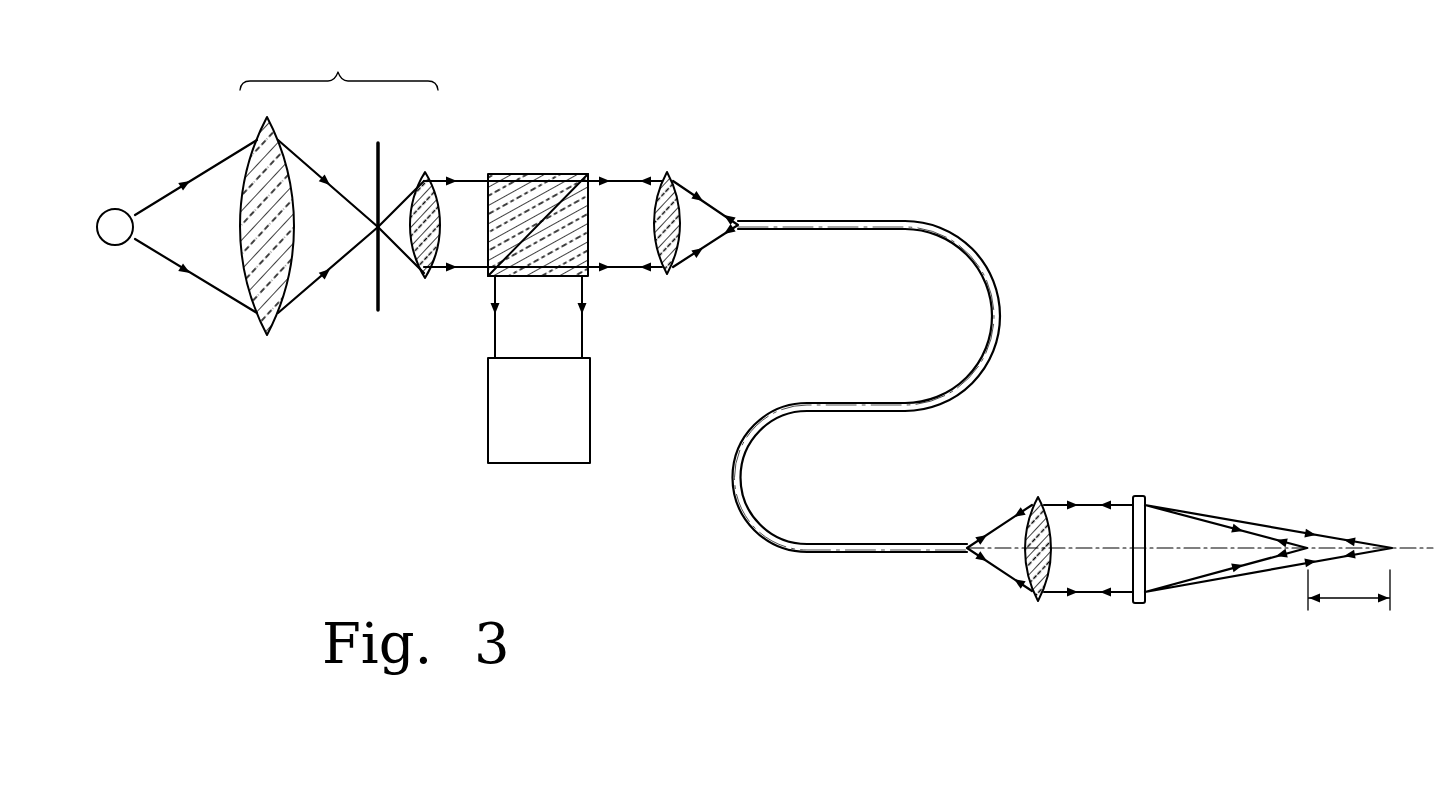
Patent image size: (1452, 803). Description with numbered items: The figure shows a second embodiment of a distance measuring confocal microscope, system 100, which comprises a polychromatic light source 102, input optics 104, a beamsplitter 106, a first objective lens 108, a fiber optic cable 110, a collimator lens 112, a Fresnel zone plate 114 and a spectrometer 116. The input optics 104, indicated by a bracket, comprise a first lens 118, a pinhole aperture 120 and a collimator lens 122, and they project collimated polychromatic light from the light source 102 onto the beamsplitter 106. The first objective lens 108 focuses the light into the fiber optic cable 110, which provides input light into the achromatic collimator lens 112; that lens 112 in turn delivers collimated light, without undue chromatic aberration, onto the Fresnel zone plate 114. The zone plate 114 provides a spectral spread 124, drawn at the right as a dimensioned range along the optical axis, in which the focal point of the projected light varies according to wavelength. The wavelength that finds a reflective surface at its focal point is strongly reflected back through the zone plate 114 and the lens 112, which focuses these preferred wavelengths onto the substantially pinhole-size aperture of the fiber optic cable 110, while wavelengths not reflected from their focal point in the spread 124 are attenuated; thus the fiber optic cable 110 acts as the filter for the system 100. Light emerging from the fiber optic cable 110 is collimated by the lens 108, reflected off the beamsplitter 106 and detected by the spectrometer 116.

The system 100 is at (879, 98).
The polychromatic light source 102 is at (116, 208).
The input optics 104 is at (342, 228).
The beamsplitter 106 is at (540, 173).
The first objective lens 108 is at (667, 172).
The fiber optic cable 110 is at (1002, 303).
The collimator lens 112 is at (1040, 496).
The Fresnel zone plate 114 is at (1140, 495).
The spectrometer 116 is at (516, 422).
The first lens 118 is at (267, 336).
The pinhole aperture 120 is at (378, 312).
The collimator lens 122 is at (428, 280).
The spectral spread 124 is at (1347, 603).